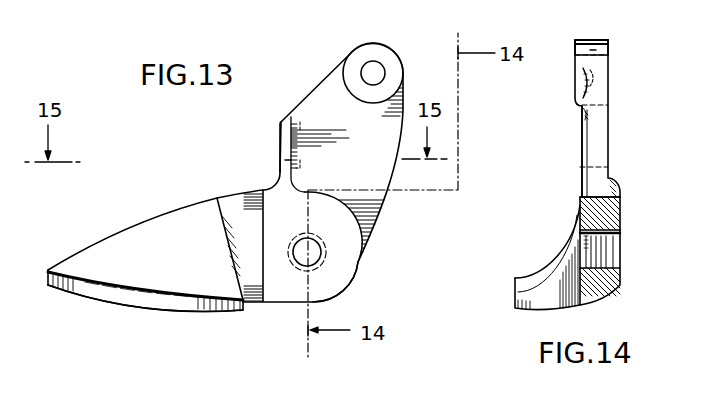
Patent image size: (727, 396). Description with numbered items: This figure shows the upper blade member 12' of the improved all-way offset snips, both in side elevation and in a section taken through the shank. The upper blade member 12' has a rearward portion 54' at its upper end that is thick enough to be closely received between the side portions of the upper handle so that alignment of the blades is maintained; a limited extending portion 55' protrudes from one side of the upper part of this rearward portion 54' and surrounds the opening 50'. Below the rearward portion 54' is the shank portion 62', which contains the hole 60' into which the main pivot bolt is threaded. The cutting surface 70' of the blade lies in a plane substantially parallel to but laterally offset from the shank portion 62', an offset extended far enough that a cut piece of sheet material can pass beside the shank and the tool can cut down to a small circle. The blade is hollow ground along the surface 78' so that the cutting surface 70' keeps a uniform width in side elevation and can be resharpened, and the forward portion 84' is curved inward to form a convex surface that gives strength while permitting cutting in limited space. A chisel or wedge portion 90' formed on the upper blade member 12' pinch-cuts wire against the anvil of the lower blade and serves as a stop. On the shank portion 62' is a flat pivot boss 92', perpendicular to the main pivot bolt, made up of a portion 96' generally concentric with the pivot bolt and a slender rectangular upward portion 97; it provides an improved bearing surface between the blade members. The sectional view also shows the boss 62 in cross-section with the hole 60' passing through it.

In FIG. 13, the upper blade member 12' is at (155, 248).
In FIG. 14, the upper blade member 12' is at (541, 151).
In FIG. 13, the opening 50' is at (390, 58).
In FIG. 14, the opening 50' is at (620, 70).
In FIG. 13, the rearward portion 54' is at (360, 65).
In FIG. 14, the rearward portion 54' is at (600, 32).
In FIG. 14, the limited extending portion 55' is at (566, 83).
In FIG. 13, the hole 60' is at (349, 252).
In FIG. 14, the hole 60' is at (619, 249).
In FIG. 14, the boss 62 is at (621, 205).
In FIG. 13, the shank portion 62' is at (357, 282).
In FIG. 13, the cutting surface 70' is at (145, 309).
In FIG. 14, the cutting surface 70' is at (525, 275).
In FIG. 14, the hollow ground surface 78' is at (547, 248).
In FIG. 14, the forward portion 84' is at (592, 299).
In FIG. 13, the wedge portion 90' is at (262, 145).
In FIG. 14, the pivot boss 92' is at (580, 197).
In FIG. 13, the portion generally concentric with the main pivot bolt 96' is at (363, 227).
In FIG. 13, the slender rectangular upward portion 97 is at (285, 160).